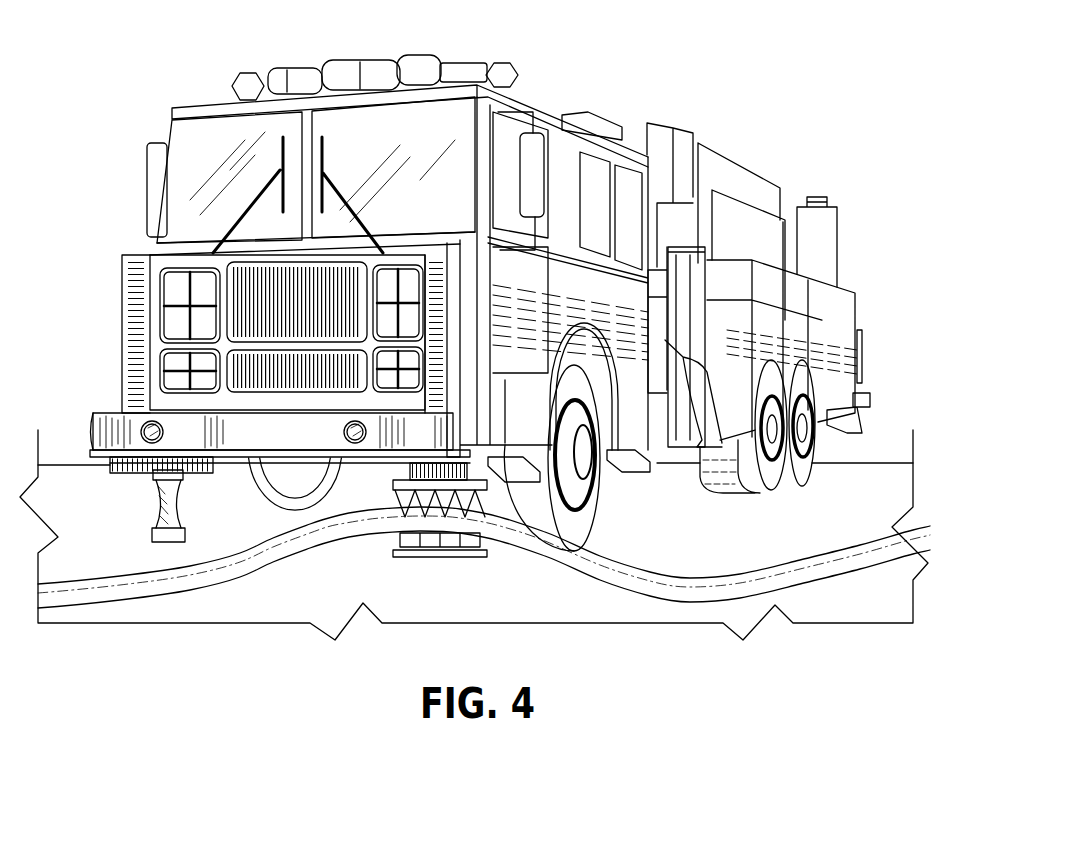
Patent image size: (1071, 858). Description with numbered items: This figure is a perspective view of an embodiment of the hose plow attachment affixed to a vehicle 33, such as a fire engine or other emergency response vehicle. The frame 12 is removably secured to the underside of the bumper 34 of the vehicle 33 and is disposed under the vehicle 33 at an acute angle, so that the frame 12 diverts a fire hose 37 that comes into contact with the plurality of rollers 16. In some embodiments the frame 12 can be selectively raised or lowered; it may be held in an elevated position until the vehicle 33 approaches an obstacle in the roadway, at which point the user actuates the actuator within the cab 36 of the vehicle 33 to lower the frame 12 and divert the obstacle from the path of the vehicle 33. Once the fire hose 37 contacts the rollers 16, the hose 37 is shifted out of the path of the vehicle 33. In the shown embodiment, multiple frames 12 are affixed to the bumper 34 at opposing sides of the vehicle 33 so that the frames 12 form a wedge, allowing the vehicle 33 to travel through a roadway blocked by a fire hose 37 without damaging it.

The vehicle 33 is at (556, 85).
The cab 36 is at (190, 143).
The bumper 34 is at (112, 432).
The frame 12 is at (153, 473).
The plurality of rollers 16 is at (410, 505).
The fire hose 37 is at (718, 583).